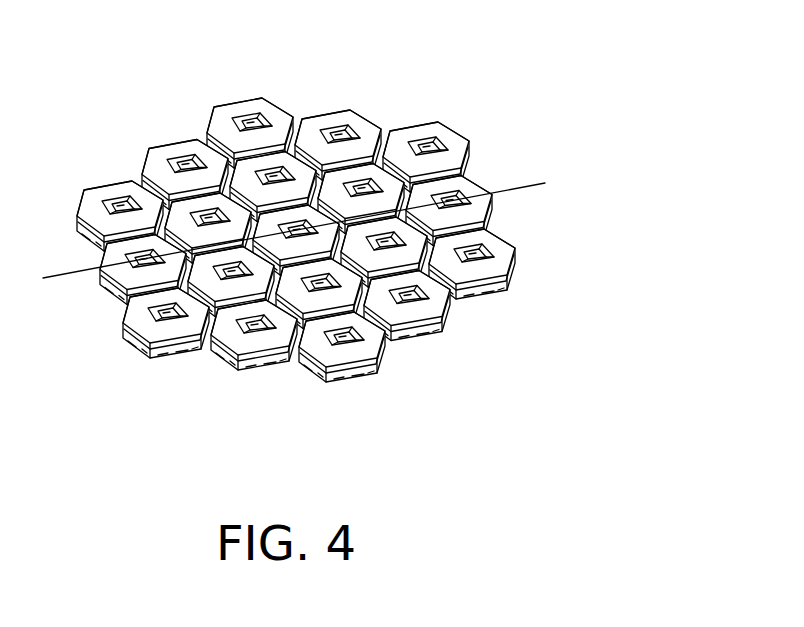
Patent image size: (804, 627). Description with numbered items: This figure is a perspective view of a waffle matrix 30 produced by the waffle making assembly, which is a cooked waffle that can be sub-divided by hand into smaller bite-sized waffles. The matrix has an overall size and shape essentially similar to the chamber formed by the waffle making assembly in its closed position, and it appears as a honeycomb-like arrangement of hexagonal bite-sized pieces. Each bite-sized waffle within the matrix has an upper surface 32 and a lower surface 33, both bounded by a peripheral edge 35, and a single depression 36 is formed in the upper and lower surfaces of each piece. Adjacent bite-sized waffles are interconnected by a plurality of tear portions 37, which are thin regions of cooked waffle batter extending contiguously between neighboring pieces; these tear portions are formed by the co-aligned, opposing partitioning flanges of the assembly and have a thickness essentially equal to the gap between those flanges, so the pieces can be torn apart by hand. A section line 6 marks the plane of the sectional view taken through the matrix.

The waffle matrix 30 is at (297, 82).
The upper surface 32 is at (179, 148).
The lower surface 33 is at (424, 334).
The peripheral edge 35 is at (506, 285).
The depression 36 is at (385, 363).
The tear portions 37 is at (397, 122).
The section line 6- 6 is at (545, 183).